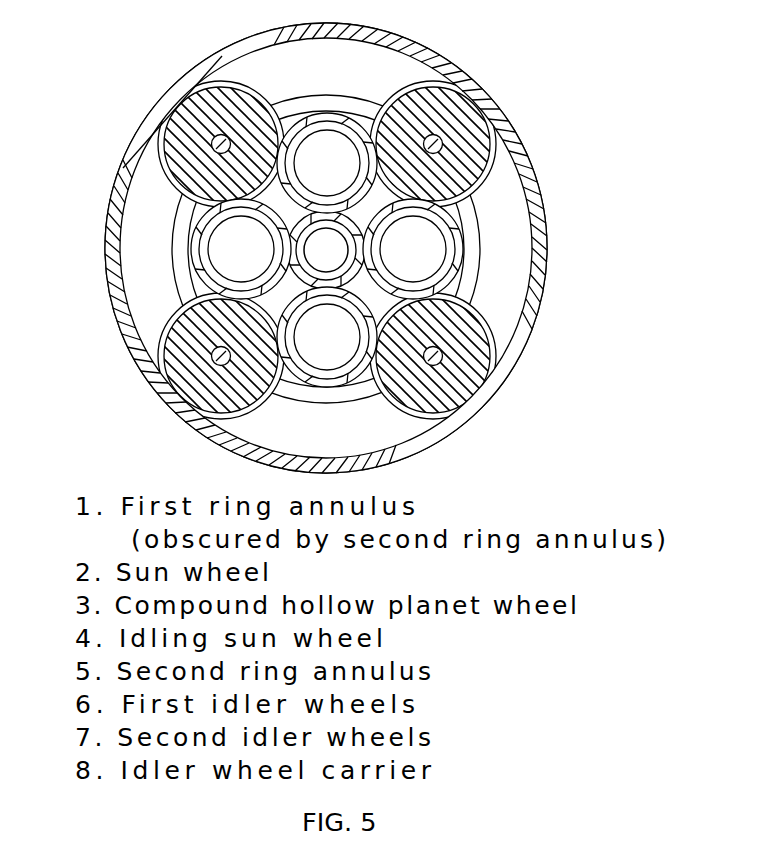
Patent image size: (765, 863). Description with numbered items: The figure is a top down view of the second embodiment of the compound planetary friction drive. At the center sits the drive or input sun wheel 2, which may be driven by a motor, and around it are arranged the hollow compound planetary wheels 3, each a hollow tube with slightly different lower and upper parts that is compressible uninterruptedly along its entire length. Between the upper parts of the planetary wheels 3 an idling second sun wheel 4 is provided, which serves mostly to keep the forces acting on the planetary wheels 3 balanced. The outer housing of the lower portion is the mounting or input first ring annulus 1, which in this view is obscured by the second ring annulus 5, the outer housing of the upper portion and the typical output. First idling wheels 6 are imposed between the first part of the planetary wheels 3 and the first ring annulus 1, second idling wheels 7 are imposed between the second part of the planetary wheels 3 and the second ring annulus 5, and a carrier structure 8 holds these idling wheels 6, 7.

The first ring annulus 1 is at (103, 273).
The sun wheel 2 is at (358, 220).
The hollow compound planetary wheel 3 is at (327, 250).
The idling second sun wheel 4 is at (326, 250).
The second ring annulus 5 is at (415, 453).
The first idling wheels 6 is at (235, 82).
The second idling wheels 7 is at (327, 250).
The carrier structure 8 is at (472, 227).